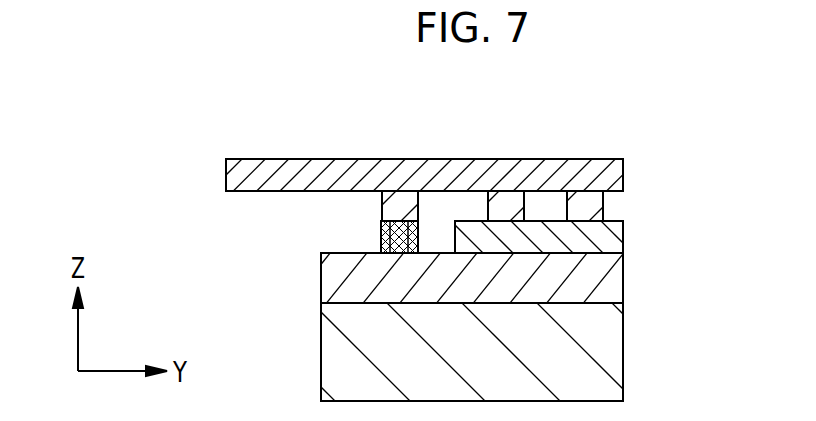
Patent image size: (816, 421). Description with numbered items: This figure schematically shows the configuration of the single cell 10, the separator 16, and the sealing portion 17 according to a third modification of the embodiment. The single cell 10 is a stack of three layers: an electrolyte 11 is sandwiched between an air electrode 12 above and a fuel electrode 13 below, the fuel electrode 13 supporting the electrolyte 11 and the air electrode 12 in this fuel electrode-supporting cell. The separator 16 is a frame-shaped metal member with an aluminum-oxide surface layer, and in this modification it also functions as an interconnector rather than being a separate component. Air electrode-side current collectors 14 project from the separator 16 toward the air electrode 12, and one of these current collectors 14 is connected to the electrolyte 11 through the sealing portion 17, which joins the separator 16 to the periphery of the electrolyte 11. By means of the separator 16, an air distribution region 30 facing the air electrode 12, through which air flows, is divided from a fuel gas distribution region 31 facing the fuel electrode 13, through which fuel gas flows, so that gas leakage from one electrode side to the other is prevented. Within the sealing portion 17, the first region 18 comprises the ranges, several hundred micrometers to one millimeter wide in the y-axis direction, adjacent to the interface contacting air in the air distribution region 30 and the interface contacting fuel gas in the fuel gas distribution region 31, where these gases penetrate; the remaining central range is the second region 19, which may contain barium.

The fuel single cell 10 is at (478, 311).
The electrolyte 11 is at (605, 279).
The air electrode 12 is at (605, 242).
The fuel electrode 13 is at (473, 352).
The air electrode-side current collector 14 is at (402, 203).
The separator 16 is at (462, 172).
The sealing portion 17 is at (369, 161).
The first region 18 is at (383, 249).
The second region 19 is at (396, 237).
The air distribution region 30 is at (449, 223).
The fuel gas distribution region 31 is at (276, 386).